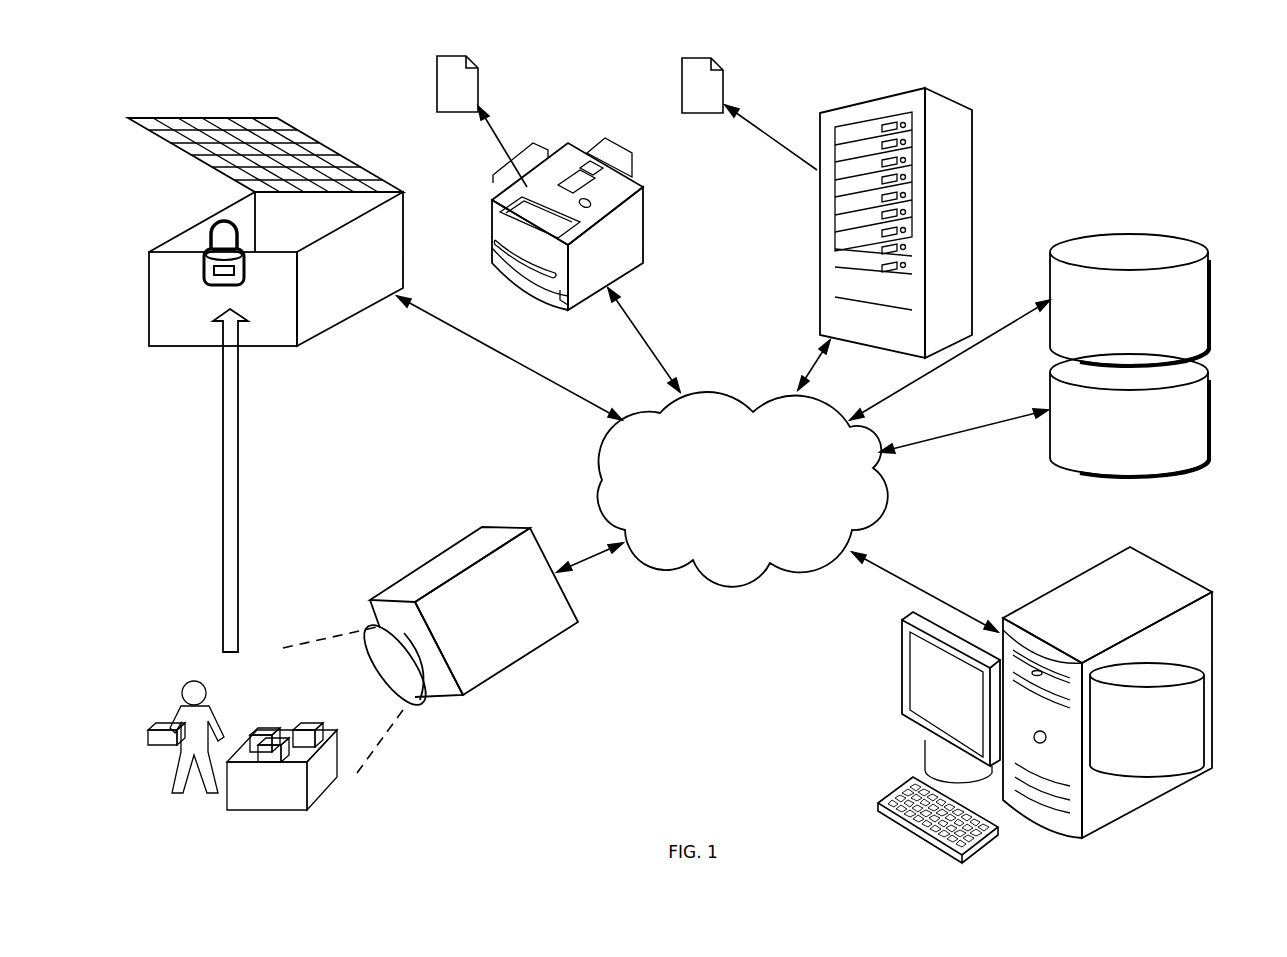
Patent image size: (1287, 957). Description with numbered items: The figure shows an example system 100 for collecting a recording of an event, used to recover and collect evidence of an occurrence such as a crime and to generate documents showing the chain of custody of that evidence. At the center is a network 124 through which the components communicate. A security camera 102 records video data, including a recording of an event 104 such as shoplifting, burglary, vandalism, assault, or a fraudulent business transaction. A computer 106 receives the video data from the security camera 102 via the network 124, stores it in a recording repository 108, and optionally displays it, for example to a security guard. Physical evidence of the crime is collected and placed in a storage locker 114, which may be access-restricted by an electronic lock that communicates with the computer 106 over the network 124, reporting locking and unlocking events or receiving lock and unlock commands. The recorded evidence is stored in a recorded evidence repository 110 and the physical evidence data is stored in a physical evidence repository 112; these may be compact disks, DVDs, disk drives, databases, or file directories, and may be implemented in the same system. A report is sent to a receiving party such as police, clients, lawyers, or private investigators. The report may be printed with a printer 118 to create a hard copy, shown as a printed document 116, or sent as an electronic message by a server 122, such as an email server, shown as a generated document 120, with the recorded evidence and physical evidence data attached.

The system 100 is at (1194, 101).
The security camera 102 is at (428, 560).
The event 104 is at (162, 641).
The computer 106 is at (1165, 562).
The recording repository 108 is at (1152, 663).
The recorded evidence repository 110 is at (1211, 410).
The physical evidence repository 112 is at (1211, 298).
The storage locker 114 is at (338, 322).
The printed document 116 is at (437, 82).
The printer 118 is at (490, 216).
The generated document 120 is at (682, 82).
The server 122 is at (820, 224).
The network 124 is at (600, 461).